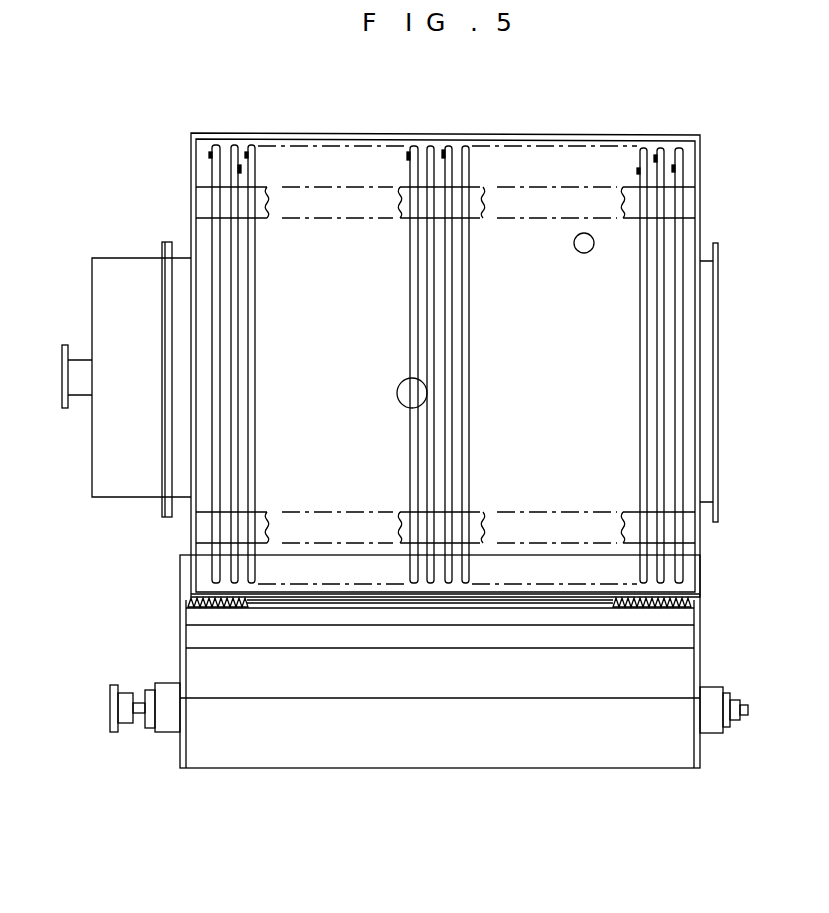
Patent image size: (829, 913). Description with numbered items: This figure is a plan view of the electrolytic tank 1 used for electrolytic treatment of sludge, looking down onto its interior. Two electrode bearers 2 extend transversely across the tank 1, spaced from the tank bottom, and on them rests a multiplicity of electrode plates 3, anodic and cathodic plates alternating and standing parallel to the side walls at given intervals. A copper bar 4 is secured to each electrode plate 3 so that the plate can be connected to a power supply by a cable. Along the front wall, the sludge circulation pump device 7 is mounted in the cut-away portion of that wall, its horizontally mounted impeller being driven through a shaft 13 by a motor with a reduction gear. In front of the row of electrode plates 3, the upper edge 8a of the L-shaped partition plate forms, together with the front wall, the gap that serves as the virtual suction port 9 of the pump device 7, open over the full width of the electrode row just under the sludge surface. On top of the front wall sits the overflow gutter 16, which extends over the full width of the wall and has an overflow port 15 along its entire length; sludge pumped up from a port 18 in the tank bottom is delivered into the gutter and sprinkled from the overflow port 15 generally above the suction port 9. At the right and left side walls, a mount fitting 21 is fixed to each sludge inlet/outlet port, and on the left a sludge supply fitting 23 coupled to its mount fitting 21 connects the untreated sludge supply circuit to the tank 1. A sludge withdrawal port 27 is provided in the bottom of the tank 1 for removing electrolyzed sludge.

The electrolytic tank 1 is at (273, 134).
The electrode bearer 2 is at (402, 224).
The electrode plate 3 is at (232, 338).
The copper bar 4 is at (636, 172).
The pump device 7 is at (593, 742).
The upper edge 8a is at (530, 592).
The suction port 9 is at (585, 606).
The shaft 13 is at (140, 690).
The overflow port 15 is at (308, 596).
The overflow gutter 16 is at (437, 670).
The port 18 is at (584, 253).
The mount fitting 21 is at (703, 418).
The sludge supply fitting 23 is at (104, 455).
The sludge withdrawal port 27 is at (400, 386).